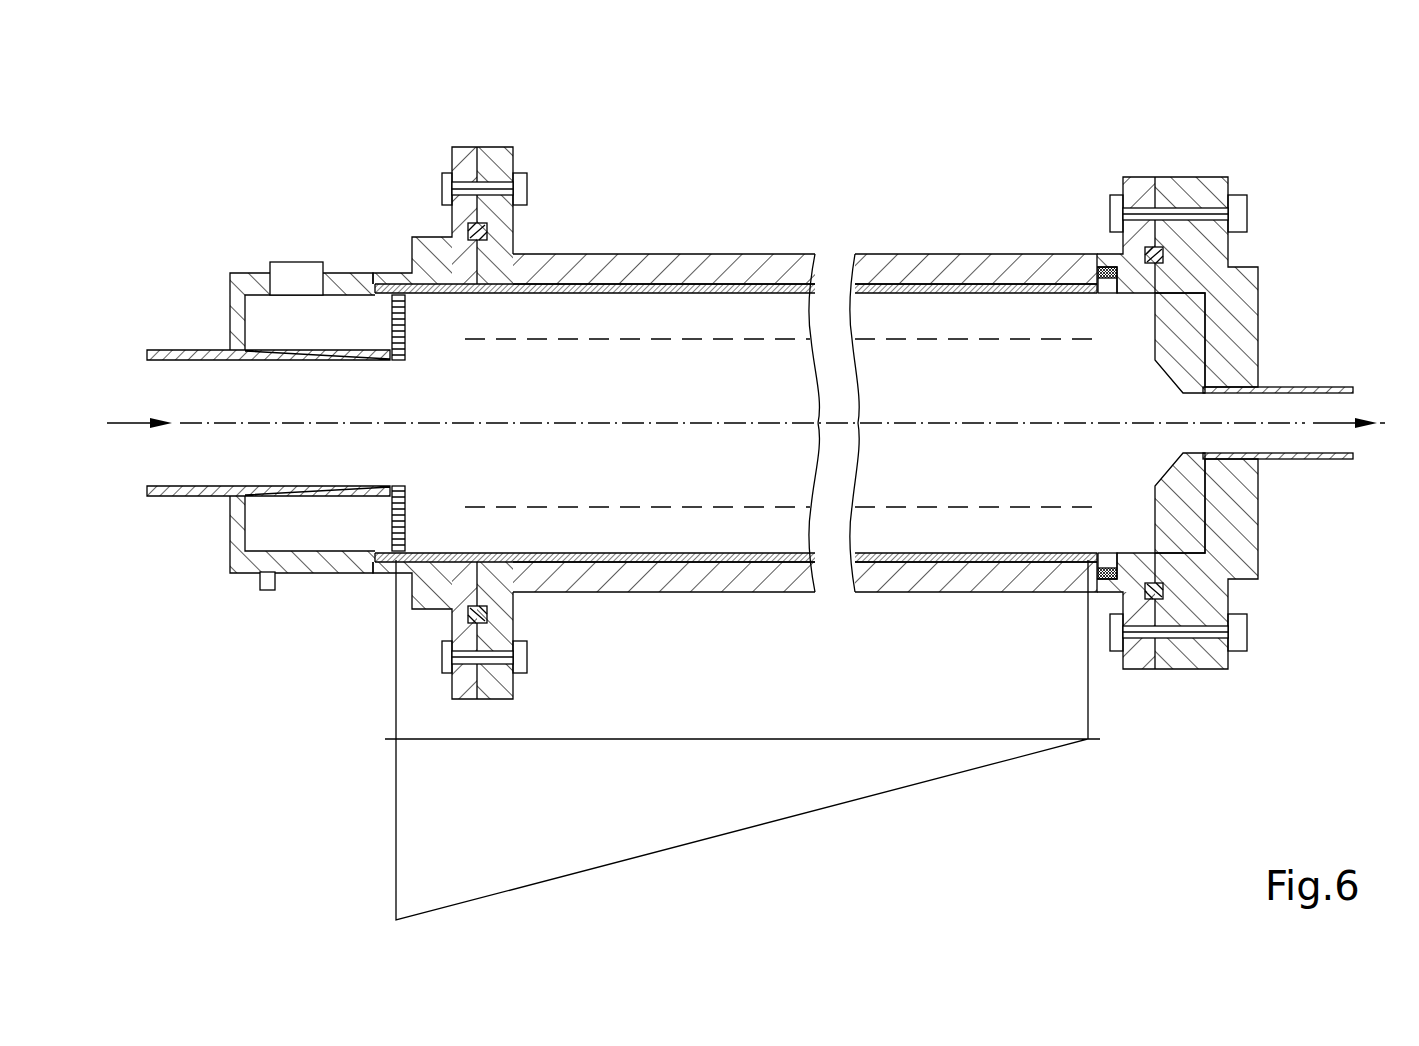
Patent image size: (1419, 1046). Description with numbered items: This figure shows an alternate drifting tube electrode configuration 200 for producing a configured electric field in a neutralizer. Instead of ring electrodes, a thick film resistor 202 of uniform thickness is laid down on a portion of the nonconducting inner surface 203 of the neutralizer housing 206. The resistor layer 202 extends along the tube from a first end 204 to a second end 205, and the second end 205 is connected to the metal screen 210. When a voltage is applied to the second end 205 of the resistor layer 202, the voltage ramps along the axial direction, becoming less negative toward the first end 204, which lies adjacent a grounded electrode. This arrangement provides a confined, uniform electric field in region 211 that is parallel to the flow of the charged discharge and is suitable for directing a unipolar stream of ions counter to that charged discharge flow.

The gas inlet tube assembly 200 is at (746, 490).
The thick film resistor 202 is at (597, 290).
The nonconducting inner surface 203 is at (738, 290).
The first end 204 is at (1093, 283).
The second end 205 is at (371, 271).
The neutralizer housing 206 is at (905, 252).
The metal screen 210 is at (390, 520).
The region 211 is at (1103, 370).